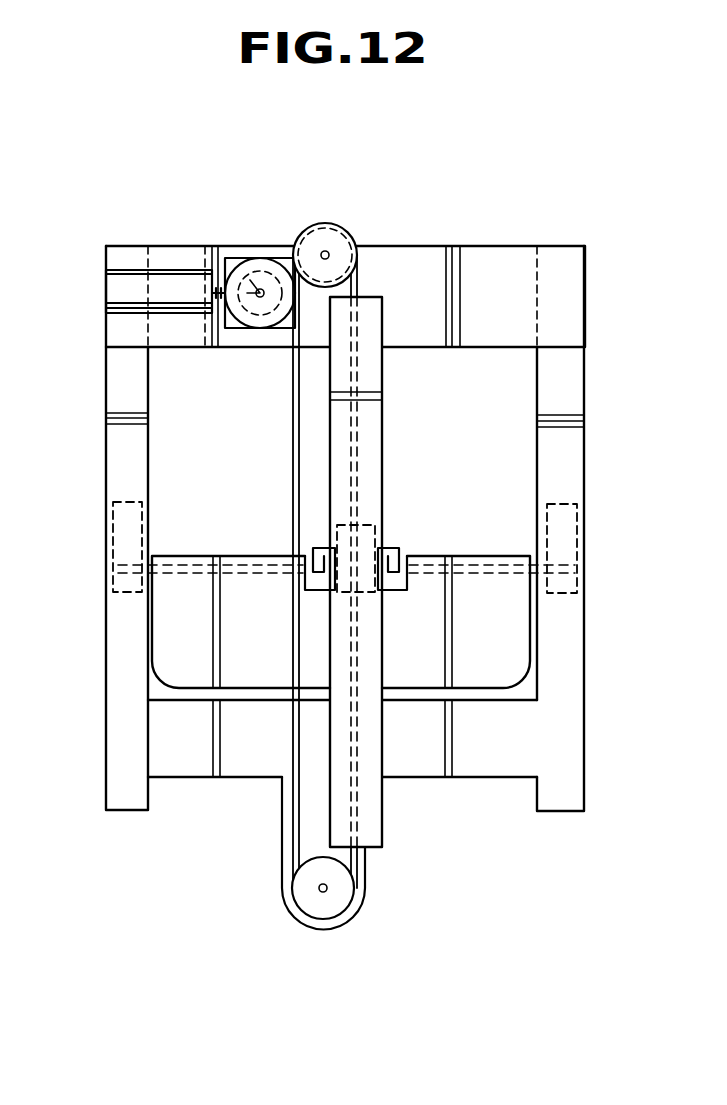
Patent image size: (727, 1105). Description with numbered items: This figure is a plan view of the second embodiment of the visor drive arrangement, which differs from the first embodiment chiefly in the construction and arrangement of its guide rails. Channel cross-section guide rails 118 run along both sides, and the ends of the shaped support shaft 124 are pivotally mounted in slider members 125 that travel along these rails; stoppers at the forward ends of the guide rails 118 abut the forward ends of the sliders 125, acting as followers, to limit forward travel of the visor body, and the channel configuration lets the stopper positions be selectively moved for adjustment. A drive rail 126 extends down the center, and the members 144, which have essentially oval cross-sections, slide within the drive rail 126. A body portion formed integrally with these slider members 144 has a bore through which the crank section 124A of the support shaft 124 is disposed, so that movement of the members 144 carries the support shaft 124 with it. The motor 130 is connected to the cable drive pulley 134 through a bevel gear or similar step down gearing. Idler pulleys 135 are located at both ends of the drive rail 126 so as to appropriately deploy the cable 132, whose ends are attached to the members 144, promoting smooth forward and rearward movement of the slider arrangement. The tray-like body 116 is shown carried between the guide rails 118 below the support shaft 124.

The tray 116 is at (160, 655).
The guide rail 118 is at (112, 388).
The support shaft 124 is at (253, 570).
The crank section 124A is at (433, 531).
The slider member 125 is at (118, 535).
The drive rail 126 is at (383, 787).
The motor 130 is at (116, 290).
The cable 132 is at (305, 920).
The cable drive pulley 134 is at (262, 330).
The idler pulley 135 is at (330, 240).
The slider member 144 is at (345, 545).